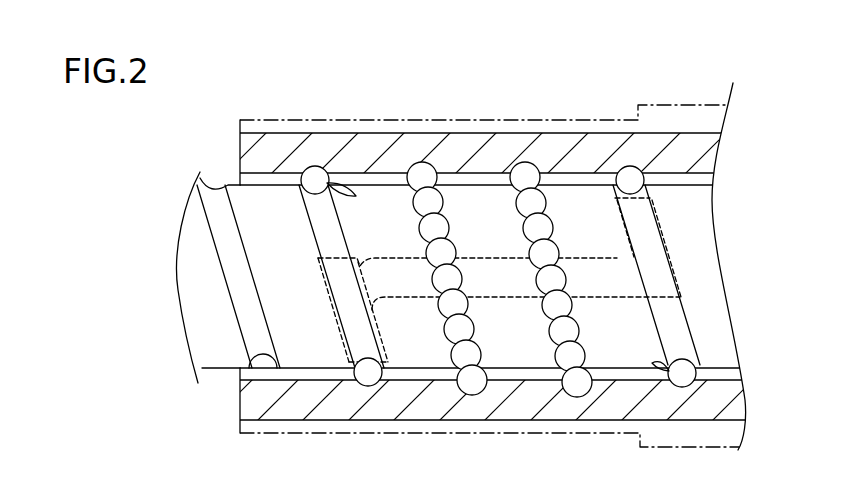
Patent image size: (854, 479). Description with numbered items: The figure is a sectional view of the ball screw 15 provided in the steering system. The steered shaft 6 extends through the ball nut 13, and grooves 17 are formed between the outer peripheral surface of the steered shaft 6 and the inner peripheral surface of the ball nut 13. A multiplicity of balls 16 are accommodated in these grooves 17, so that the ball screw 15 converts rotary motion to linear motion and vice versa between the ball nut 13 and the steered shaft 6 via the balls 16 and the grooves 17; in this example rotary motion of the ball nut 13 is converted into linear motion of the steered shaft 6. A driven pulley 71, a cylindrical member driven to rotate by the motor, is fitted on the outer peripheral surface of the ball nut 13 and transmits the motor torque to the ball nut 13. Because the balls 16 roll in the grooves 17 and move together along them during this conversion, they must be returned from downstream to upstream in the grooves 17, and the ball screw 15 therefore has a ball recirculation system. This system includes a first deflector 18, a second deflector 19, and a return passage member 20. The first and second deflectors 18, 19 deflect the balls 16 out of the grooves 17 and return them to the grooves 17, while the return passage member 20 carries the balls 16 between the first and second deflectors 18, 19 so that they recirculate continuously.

The steered shaft 6 is at (181, 208).
The ball nut 13 is at (280, 142).
The ball screw 15 is at (293, 204).
The balls 16 is at (623, 186).
The grooves 17 is at (340, 190).
The first deflector 18 is at (673, 252).
The second deflector 19 is at (328, 317).
The return passage member 20 is at (492, 252).
The driven pulley 71 is at (521, 120).